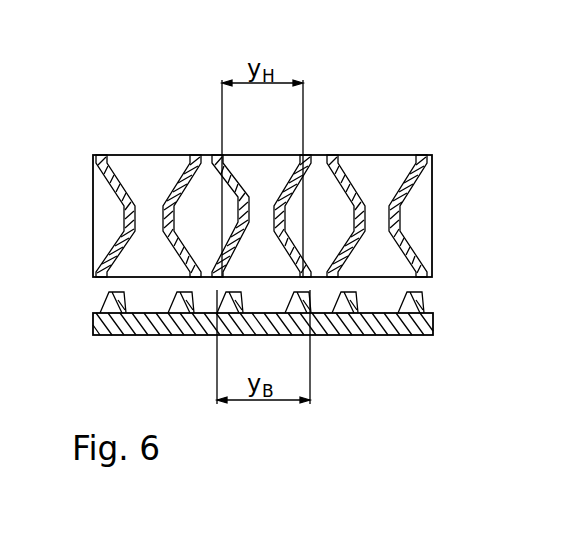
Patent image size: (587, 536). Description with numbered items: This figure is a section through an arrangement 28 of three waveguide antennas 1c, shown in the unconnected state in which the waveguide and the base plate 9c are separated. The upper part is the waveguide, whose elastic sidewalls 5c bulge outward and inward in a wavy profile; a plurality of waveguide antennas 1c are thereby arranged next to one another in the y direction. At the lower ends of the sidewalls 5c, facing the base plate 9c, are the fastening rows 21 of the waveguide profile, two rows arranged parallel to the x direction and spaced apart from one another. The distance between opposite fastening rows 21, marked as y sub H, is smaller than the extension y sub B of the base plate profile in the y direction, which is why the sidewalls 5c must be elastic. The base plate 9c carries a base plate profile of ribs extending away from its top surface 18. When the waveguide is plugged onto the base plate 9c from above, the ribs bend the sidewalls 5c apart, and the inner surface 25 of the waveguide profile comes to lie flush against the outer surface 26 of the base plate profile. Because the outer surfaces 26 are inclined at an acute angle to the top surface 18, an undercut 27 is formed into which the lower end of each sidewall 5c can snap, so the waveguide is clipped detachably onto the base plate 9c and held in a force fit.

The waveguide antenna 1c is at (325, 150).
The sidewall 5c is at (103, 155).
The base plate 9c is at (408, 328).
The top surface 18 is at (368, 309).
The fastening row 21 is at (321, 289).
The inner surface 25 is at (186, 263).
The outer surface 26 is at (98, 318).
The undercut 27 is at (426, 311).
The arrangement 28 is at (358, 101).